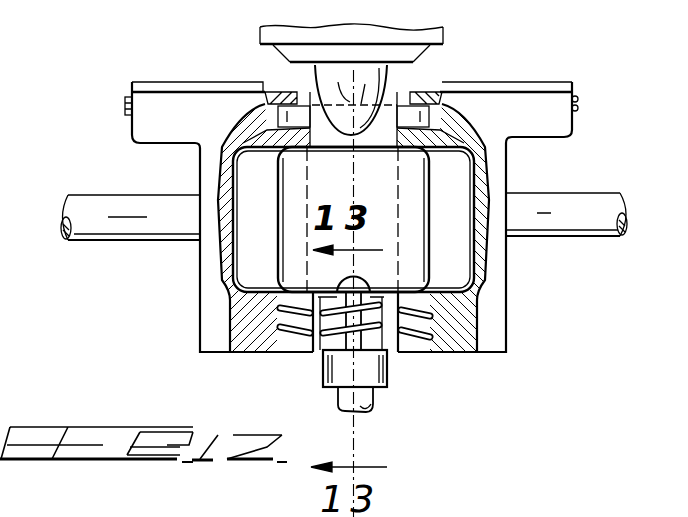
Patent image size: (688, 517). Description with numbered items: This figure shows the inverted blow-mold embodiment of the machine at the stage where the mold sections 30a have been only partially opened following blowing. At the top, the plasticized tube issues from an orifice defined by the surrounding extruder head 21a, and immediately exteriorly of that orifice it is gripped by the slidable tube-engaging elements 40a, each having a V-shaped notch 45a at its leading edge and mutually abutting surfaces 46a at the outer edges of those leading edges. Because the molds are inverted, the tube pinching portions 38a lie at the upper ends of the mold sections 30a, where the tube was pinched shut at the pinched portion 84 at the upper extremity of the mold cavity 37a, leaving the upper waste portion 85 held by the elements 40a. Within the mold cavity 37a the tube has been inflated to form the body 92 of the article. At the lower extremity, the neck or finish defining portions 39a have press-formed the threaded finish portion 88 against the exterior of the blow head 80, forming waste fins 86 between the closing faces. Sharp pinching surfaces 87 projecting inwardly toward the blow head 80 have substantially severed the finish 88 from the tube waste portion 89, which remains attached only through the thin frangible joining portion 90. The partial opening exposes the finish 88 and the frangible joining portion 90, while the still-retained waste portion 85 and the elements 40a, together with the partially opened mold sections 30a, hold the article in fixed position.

The extruder head 21a is at (430, 33).
The mutually abutting surfaces 46a is at (338, 74).
The V-shaped notch 45a is at (313, 97).
The upper waste portion 85 is at (418, 86).
The pinched portion 84 is at (353, 137).
The tube-engaging elements 40a is at (441, 82).
The mold sections 30a is at (560, 171).
The tube pinching portions 38a is at (304, 137).
The mold cavity 37a is at (243, 270).
The body 92 is at (423, 206).
The neck or finish defining portions 39a is at (416, 342).
The threaded finish portion 88 is at (368, 332).
The fins 86 is at (378, 352).
The frangible joining portion 90 is at (343, 338).
The pinching surfaces 87 is at (291, 344).
The tube waste portion 89 is at (333, 381).
The blow head 80 is at (370, 406).